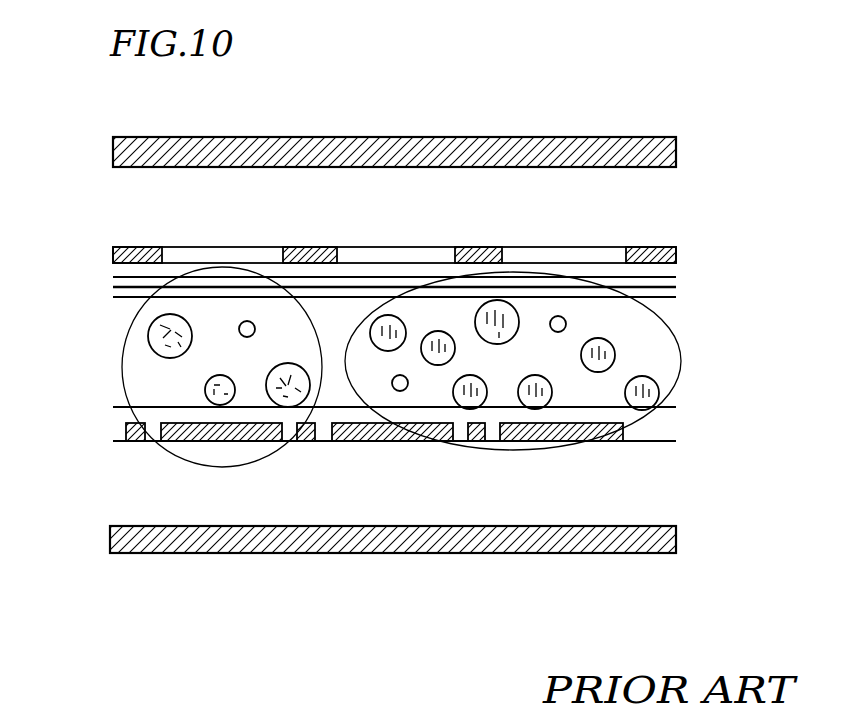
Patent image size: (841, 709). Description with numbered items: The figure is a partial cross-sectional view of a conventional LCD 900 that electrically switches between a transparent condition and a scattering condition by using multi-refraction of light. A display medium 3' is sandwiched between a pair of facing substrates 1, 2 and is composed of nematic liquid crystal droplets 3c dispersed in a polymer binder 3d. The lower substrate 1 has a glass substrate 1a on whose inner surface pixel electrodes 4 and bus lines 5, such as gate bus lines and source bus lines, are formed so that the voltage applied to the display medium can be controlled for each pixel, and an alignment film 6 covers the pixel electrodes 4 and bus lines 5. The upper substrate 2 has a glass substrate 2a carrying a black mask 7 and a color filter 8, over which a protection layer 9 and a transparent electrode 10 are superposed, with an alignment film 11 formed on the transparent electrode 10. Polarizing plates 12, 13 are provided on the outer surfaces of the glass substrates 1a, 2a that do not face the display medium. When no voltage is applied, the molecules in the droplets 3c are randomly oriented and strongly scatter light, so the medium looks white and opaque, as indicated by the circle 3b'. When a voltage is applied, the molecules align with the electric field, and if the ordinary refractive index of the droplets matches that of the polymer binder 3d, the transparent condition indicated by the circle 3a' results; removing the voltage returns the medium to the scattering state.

The LCD 900 is at (681, 77).
The polarizing plate 13 is at (633, 160).
The glass substrate 2a is at (547, 192).
The substrate 2 is at (695, 170).
The black mask 7 is at (468, 252).
The color filter 8 is at (393, 250).
The protection layer 9 is at (347, 271).
The transparent electrode 10 is at (208, 290).
The alignment film 11 is at (180, 285).
The display medium 3' is at (427, 352).
The nematic liquid crystal droplets 3c is at (148, 338).
The polymer binder 3d is at (142, 383).
The circle indicating scattering condition 3b' is at (222, 445).
The circle indicating transparent condition 3a' is at (513, 447).
The alignment film 6 is at (118, 426).
The bus lines 5 is at (301, 443).
The pixel electrodes 4 is at (346, 443).
The substrate 1 is at (695, 414).
The glass substrate 1a is at (500, 512).
The polarizing plate 12 is at (580, 553).